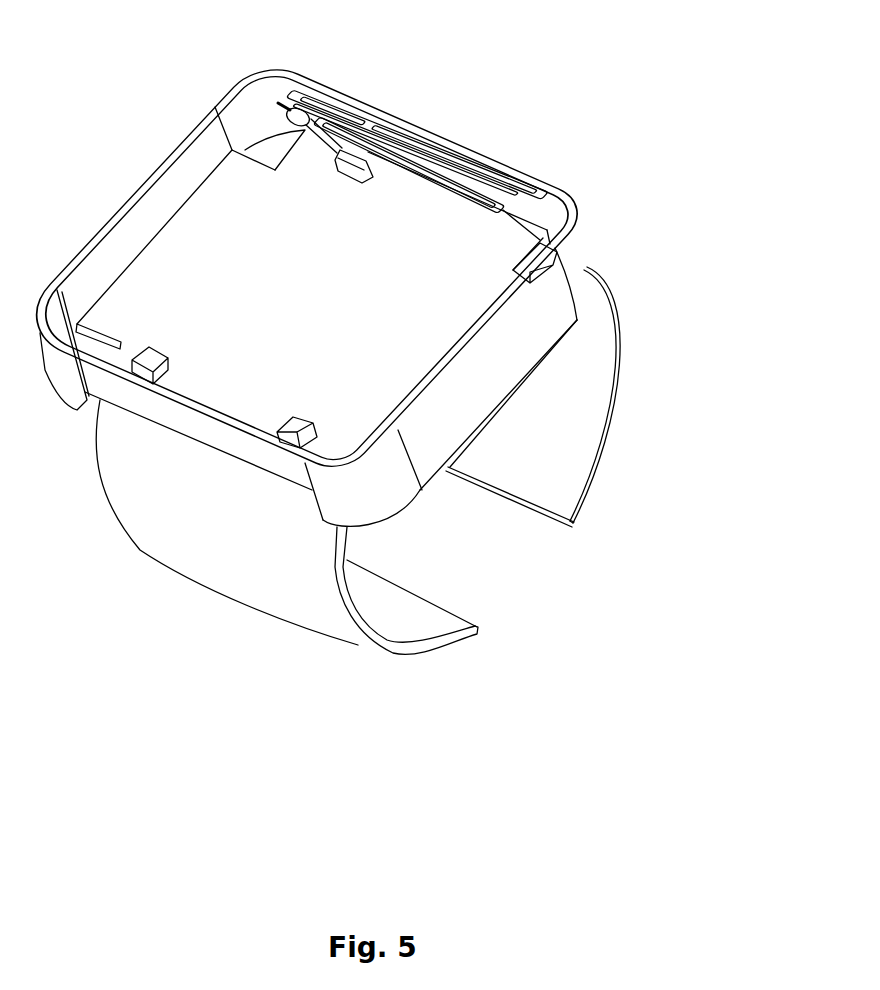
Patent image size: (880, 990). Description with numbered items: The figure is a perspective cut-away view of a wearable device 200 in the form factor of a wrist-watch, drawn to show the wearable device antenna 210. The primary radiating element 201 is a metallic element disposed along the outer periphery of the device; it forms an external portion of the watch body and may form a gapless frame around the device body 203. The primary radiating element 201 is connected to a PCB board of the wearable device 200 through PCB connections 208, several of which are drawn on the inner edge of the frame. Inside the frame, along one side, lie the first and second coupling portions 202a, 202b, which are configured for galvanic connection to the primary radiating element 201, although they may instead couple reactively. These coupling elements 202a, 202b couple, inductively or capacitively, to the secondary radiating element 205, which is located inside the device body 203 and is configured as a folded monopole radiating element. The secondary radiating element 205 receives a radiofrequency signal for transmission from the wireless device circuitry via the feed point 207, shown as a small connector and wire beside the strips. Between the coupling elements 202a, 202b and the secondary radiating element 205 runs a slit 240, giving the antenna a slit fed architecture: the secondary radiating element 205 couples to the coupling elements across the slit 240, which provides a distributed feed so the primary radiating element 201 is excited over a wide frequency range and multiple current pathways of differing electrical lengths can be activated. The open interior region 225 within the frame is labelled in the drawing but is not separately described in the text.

The wearable device 200 is at (172, 23).
The primary radiating element 201 is at (527, 183).
The first coupling portion 202a is at (473, 173).
The second coupling portion 202b is at (337, 110).
The device body 203 is at (583, 230).
The secondary radiating element 205 is at (430, 180).
The feed point 207 is at (340, 173).
The PCB connections 208 is at (293, 407).
The wearable device antenna 210 is at (418, 106).
The interior cavity 225 is at (195, 268).
The slit 240 is at (400, 147).